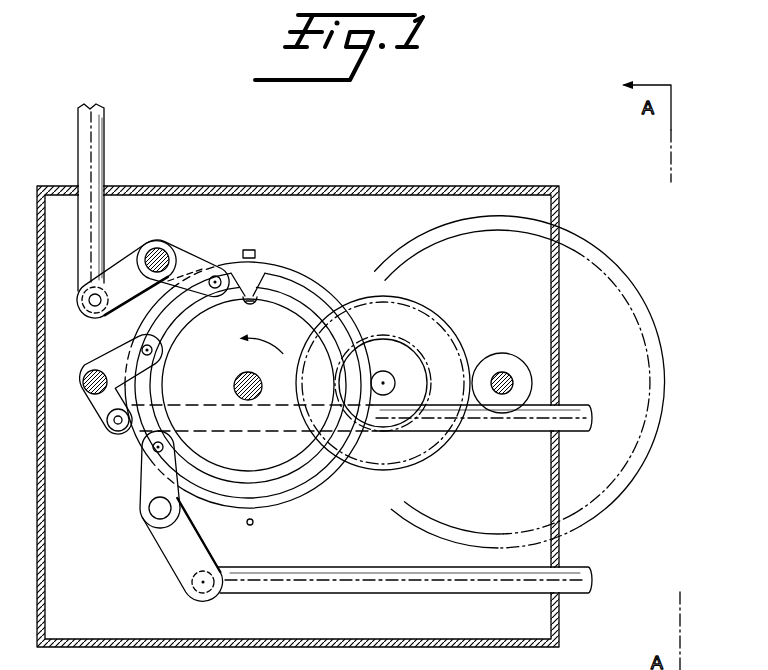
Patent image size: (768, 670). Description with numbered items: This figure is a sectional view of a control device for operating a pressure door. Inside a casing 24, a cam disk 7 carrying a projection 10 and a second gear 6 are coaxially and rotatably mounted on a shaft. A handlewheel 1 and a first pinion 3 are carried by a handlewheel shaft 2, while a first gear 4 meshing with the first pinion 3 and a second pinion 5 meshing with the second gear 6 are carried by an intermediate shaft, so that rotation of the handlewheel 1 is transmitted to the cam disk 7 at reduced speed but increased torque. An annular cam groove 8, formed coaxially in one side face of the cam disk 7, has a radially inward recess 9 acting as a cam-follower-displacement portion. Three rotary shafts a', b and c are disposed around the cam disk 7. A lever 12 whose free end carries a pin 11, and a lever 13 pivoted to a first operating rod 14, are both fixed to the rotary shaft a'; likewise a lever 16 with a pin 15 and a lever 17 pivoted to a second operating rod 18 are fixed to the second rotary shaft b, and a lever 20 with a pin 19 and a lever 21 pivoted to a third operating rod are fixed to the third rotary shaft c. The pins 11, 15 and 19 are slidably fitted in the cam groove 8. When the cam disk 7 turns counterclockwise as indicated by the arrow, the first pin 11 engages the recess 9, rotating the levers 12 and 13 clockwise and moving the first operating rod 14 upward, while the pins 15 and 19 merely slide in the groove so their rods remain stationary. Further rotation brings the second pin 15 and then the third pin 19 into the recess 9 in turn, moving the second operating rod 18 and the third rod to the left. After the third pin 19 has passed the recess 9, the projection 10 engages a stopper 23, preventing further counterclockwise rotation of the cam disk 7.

The handlewheel 1 is at (657, 380).
The handlewheel shaft 2 is at (512, 380).
The first pinion 3 is at (520, 356).
The first gear 4 is at (418, 313).
The second pinion 5 is at (378, 332).
The second gear 6 is at (333, 273).
The cam disk 7 is at (303, 267).
The annular cam groove 8 is at (313, 478).
The recess 9 is at (256, 290).
The projection 10 is at (250, 250).
The first pin 11 is at (216, 275).
The lever 12 is at (188, 252).
The lever 13 is at (108, 272).
The first operating rod 14 is at (78, 163).
The second pin 15 is at (137, 343).
The lever 16 is at (100, 348).
The lever 17 is at (100, 414).
The second operating rod 18 is at (589, 433).
The third pin 19 is at (154, 448).
The lever 20 is at (142, 483).
The lever 21 is at (176, 570).
The stopper 23 is at (256, 522).
The casing 24 is at (548, 186).
The rotary shaft a' is at (158, 236).
The second rotary shaft b is at (80, 384).
The third rotary shaft c is at (152, 512).